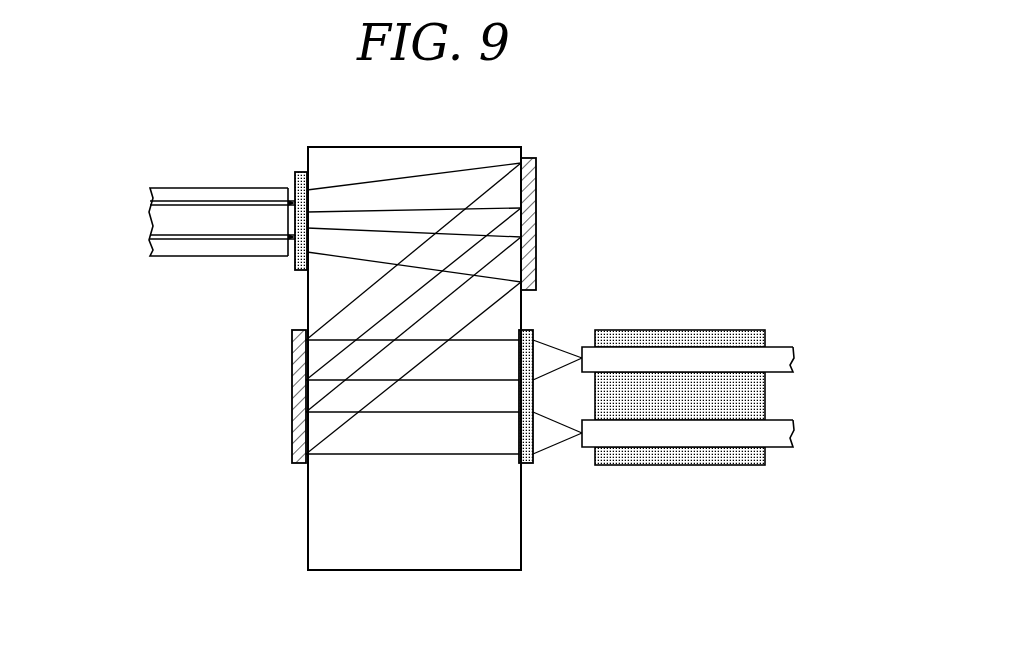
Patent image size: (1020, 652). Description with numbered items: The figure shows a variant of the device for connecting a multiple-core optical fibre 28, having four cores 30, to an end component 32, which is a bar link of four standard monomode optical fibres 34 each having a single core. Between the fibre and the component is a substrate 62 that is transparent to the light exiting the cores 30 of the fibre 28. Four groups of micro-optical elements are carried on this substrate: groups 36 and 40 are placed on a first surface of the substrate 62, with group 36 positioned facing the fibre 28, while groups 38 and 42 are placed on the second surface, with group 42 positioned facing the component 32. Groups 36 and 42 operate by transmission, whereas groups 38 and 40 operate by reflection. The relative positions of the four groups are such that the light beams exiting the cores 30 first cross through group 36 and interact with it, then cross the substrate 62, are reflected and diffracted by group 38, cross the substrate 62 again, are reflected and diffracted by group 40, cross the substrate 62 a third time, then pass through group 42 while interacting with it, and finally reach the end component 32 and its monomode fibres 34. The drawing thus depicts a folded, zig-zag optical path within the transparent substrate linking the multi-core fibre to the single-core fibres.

The multiple-core optical fibre 28 is at (211, 182).
The cores 30 is at (228, 207).
The end component 32 is at (709, 321).
The standard monomode optical fibres 34 is at (793, 362).
The group of micro-optical elements 36 is at (299, 168).
The group of micro-optical elements 38 is at (539, 217).
The group of micro-optical elements 40 is at (290, 443).
The group of micro-optical elements 42 is at (541, 466).
The substrate 62 is at (407, 168).